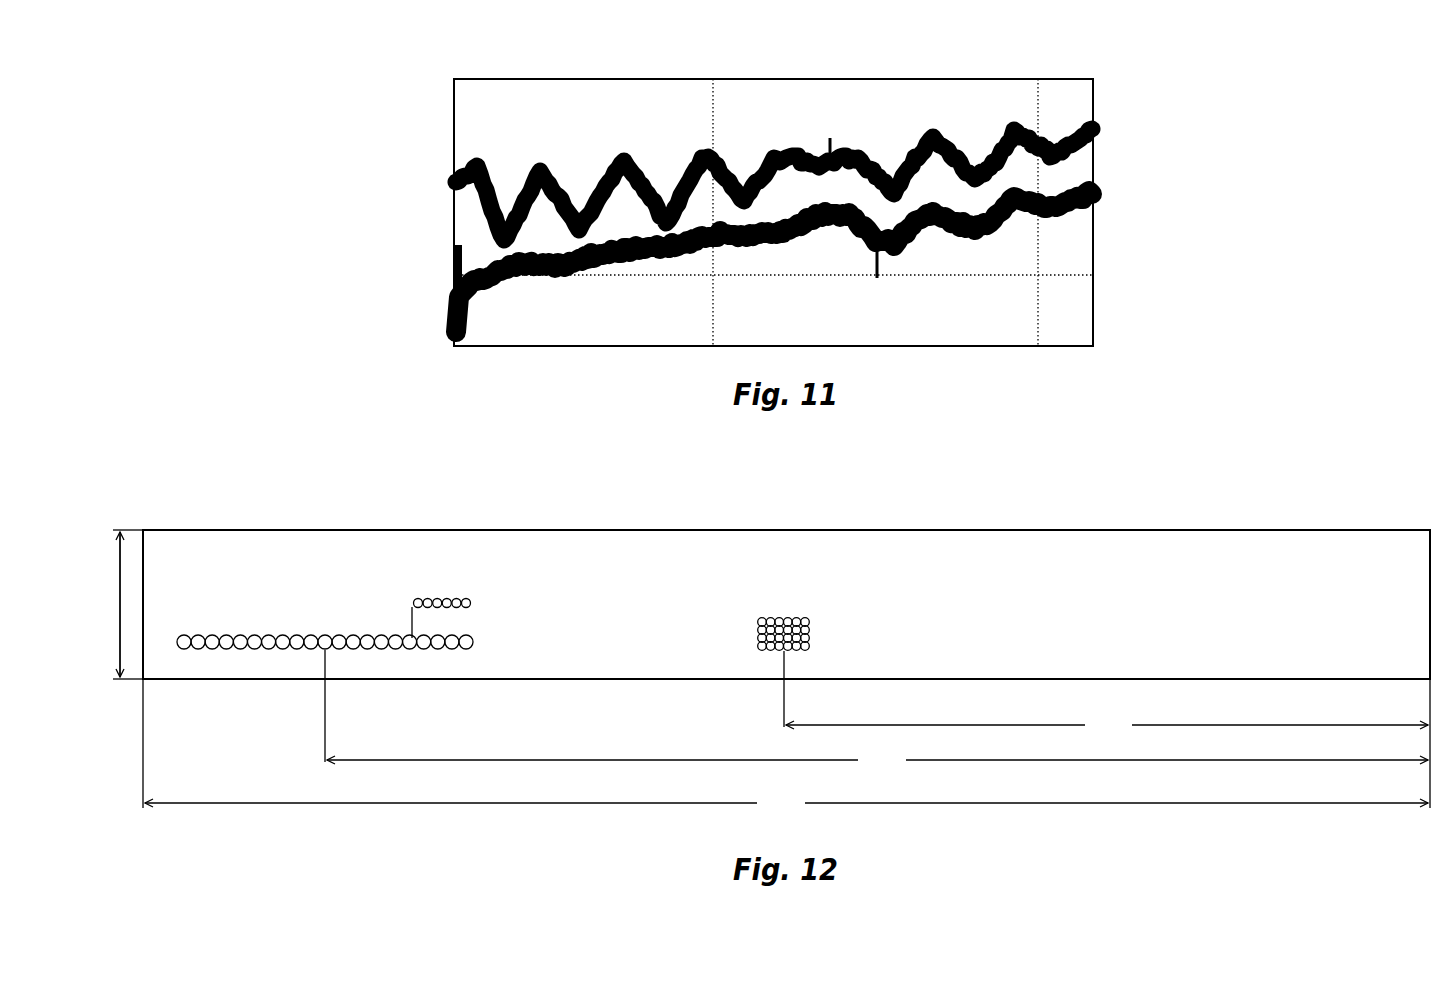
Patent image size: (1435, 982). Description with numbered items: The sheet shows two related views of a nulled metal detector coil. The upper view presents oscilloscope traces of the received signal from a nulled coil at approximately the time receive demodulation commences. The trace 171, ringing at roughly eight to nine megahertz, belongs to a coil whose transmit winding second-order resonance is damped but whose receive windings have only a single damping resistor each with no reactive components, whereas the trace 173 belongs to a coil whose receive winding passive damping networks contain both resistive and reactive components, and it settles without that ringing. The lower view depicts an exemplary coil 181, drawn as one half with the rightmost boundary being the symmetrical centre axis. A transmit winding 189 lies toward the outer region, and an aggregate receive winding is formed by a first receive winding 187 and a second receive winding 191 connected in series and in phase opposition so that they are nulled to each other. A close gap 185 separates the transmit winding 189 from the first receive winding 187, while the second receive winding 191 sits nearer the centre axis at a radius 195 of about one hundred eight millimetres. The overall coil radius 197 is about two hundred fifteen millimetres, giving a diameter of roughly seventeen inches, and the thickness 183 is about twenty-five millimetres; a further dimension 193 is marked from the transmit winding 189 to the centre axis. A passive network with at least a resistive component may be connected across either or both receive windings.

In FIG. 11, the trace 171 is at (765, 165).
In FIG. 11, the trace 173 is at (640, 268).
In FIG. 12, the coil 181 is at (1330, 526).
In FIG. 12, the thickness 183 is at (123, 604).
In FIG. 12, the close gap 185 is at (405, 618).
In FIG. 12, the first receive winding 187 is at (455, 597).
In FIG. 12, the transmit winding 189 is at (236, 652).
In FIG. 12, the second receive winding 191 is at (776, 616).
In FIG. 12, the distance from electrode row to end 193 is at (876, 711).
In FIG. 12, the radius of the second receive winding 195 is at (1106, 694).
In FIG. 12, the coil radius 197 is at (786, 803).